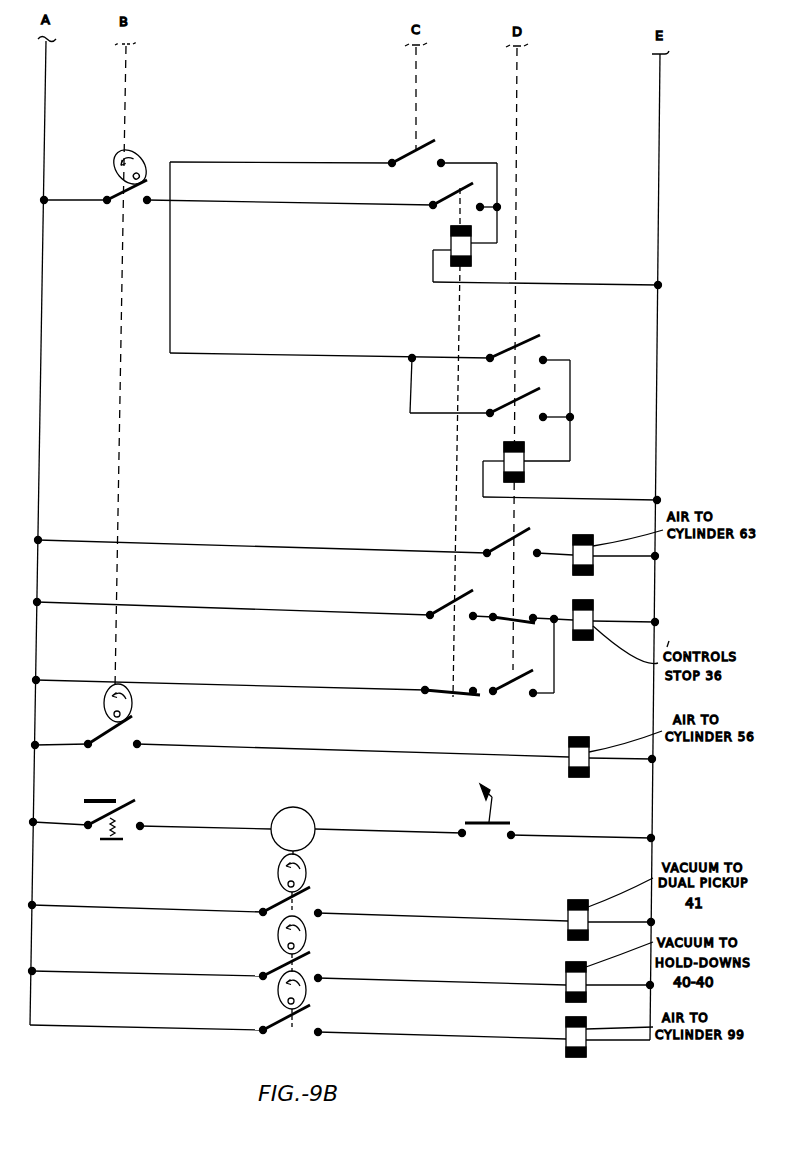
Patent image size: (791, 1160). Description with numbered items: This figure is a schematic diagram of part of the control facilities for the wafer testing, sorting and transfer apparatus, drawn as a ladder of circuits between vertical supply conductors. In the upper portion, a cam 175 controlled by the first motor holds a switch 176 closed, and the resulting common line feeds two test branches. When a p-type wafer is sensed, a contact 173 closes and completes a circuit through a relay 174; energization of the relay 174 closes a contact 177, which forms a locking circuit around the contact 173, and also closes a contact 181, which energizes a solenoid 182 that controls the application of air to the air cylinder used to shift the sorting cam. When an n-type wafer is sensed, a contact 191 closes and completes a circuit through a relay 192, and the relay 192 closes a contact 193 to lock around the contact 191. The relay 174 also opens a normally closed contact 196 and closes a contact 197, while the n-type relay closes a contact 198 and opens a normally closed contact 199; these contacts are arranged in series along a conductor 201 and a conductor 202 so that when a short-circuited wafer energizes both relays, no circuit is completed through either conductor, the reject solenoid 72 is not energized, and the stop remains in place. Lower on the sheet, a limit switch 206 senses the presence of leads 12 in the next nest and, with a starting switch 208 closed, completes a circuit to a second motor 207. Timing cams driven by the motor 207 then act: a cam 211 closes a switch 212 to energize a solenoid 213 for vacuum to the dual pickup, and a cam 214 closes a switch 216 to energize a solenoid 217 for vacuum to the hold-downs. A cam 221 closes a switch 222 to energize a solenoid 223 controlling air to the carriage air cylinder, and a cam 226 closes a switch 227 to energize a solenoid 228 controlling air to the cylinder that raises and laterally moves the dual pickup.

The leads 12 is at (100, 797).
The reject solenoid 72 is at (593, 610).
The contact 173 is at (507, 351).
The relay 174 is at (524, 468).
The cam 175 is at (116, 172).
The switch 176 is at (148, 183).
The contact 177 is at (512, 405).
The contact 181 is at (510, 538).
The solenoid 182 is at (575, 536).
The contact 191 is at (408, 156).
The relay 192 is at (451, 242).
The contact 193 is at (433, 200).
The normally closed contact 196 is at (514, 621).
The contact 197 is at (520, 680).
The contact 198 is at (452, 603).
The normally closed contact 199 is at (455, 694).
The conductor 201 is at (165, 607).
The conductor 202 is at (237, 685).
The limit switch 206 is at (135, 803).
The second motor 207 is at (311, 815).
The starting switch 208 is at (502, 821).
The cam 211 is at (278, 875).
The switch 212 is at (305, 895).
The solenoid 213 is at (576, 902).
The cam 214 is at (278, 937).
The switch 216 is at (308, 957).
The solenoid 217 is at (586, 979).
The cam 221 is at (104, 702).
The switch 222 is at (135, 722).
The solenoid 223 is at (569, 745).
The cam 226 is at (280, 1003).
The switch 227 is at (308, 1020).
The solenoid 228 is at (586, 1021).